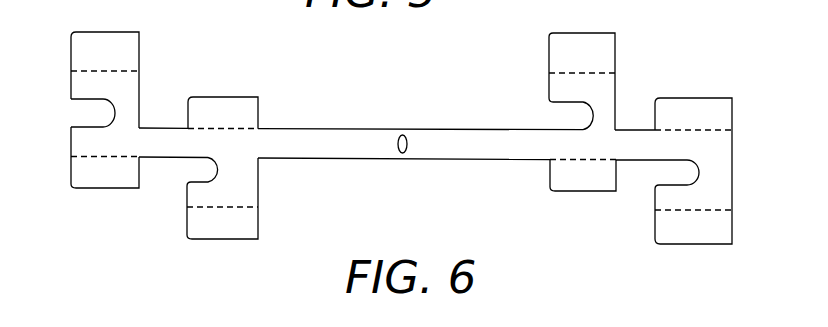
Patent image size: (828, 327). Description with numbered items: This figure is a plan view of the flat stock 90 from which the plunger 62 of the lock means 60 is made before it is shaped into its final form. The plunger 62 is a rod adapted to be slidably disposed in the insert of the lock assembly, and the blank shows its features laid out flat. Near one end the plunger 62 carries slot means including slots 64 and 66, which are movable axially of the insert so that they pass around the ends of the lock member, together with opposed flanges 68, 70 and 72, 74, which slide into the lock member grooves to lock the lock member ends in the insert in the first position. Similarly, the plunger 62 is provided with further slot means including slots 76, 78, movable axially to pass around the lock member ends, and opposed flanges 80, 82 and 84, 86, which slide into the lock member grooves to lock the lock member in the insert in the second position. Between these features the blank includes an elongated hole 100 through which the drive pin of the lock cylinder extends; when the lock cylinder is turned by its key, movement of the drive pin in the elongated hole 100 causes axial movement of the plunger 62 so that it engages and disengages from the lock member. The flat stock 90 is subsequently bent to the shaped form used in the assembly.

The lock means 60 is at (326, 57).
The plunger 62 is at (345, 128).
The slot 64 is at (93, 103).
The slot 66 is at (568, 104).
The flange 68 is at (117, 32).
The flange 70 is at (119, 189).
The flange 72 is at (596, 33).
The flange 74 is at (593, 192).
The slot 76 is at (209, 163).
The slot 78 is at (689, 169).
The flange 80 is at (237, 97).
The flange 82 is at (232, 240).
The flange 84 is at (706, 98).
The flange 86 is at (700, 246).
The flat stock 90 is at (420, 98).
The elongated hole 100 is at (408, 141).